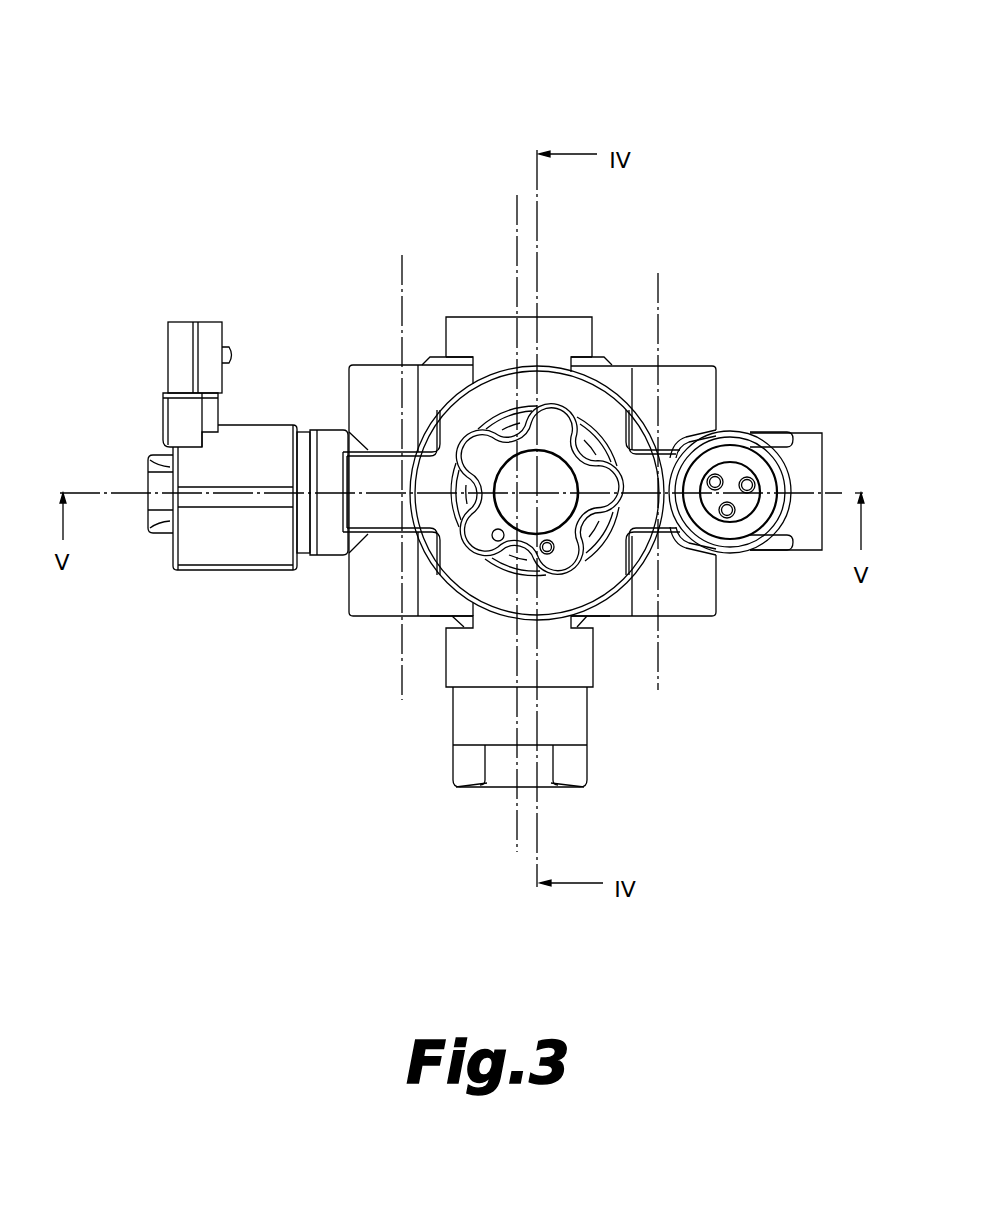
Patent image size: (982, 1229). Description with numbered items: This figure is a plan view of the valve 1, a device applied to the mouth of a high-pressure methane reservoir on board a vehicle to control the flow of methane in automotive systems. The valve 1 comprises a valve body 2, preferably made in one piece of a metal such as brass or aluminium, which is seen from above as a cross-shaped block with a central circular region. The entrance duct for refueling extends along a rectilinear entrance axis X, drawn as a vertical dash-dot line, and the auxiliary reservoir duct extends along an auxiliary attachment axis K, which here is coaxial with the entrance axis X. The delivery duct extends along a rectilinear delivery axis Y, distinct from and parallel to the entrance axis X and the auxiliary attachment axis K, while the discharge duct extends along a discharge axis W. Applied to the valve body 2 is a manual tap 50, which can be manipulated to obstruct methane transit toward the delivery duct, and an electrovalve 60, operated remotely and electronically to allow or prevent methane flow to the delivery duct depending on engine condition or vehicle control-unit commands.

The valve 1 is at (323, 153).
The valve body 2 is at (690, 360).
The manual tap 50 is at (578, 582).
The electrovalve 60 is at (236, 582).
The auxiliary attachment axis K is at (517, 207).
The entrance axis X is at (517, 847).
The delivery axis Y is at (402, 262).
The discharge axis W is at (658, 288).